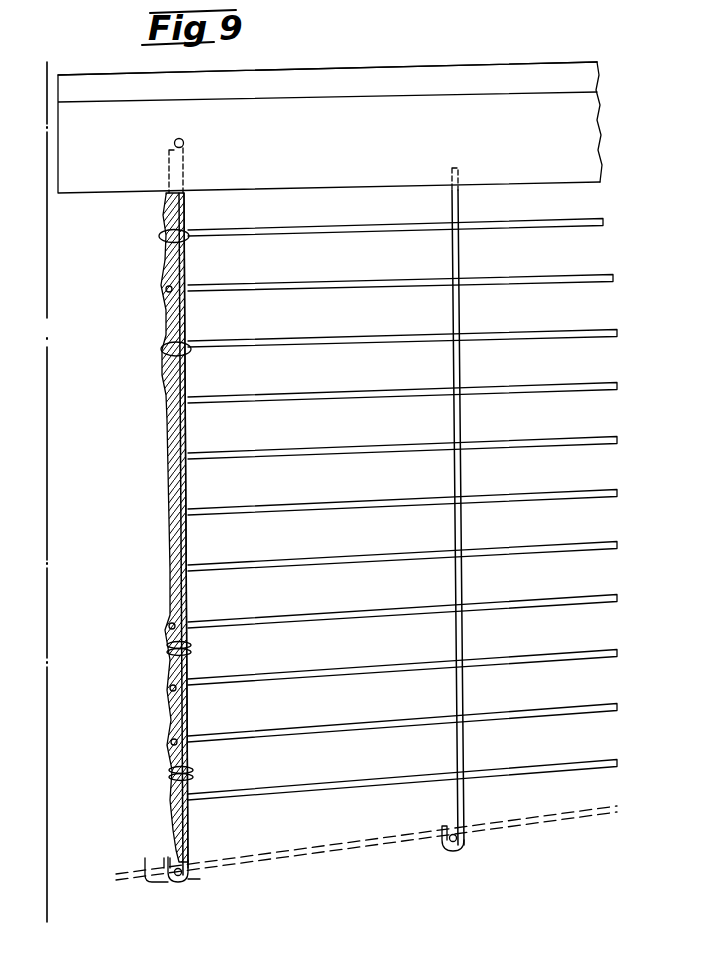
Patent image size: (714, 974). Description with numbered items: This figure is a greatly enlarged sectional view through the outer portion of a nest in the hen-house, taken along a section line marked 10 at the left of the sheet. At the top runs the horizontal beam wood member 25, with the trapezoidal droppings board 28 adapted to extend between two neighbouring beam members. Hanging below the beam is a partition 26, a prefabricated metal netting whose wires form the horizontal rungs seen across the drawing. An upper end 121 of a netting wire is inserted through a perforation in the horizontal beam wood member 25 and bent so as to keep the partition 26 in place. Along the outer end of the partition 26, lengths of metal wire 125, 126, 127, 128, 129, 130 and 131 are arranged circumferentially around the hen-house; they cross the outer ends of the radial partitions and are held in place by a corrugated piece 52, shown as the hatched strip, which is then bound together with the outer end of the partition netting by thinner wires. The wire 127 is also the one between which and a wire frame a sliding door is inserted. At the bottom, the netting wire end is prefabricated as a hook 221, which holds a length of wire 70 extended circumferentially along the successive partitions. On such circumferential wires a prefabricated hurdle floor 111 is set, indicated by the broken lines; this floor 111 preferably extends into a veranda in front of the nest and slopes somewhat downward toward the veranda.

The section line indicator 10 is at (40, 66).
The horizontal beam wood member 25 is at (366, 108).
The trapezoidal droppings board 28 is at (445, 82).
The upper end of wire 121 is at (185, 141).
The length of metal wire 125 is at (163, 200).
The length of metal wire 126 is at (163, 289).
The length of metal wire 127 is at (166, 368).
The length of metal wire 128 is at (168, 623).
The length of metal wire 129 is at (170, 684).
The length of metal wire 130 is at (170, 739).
The length of metal wire 131 is at (173, 794).
The partition 26 is at (193, 257).
The corrugated piece 52 is at (172, 463).
The length of wire 70 is at (192, 879).
The hook 221 is at (143, 864).
The hurdle floor 111 is at (384, 838).